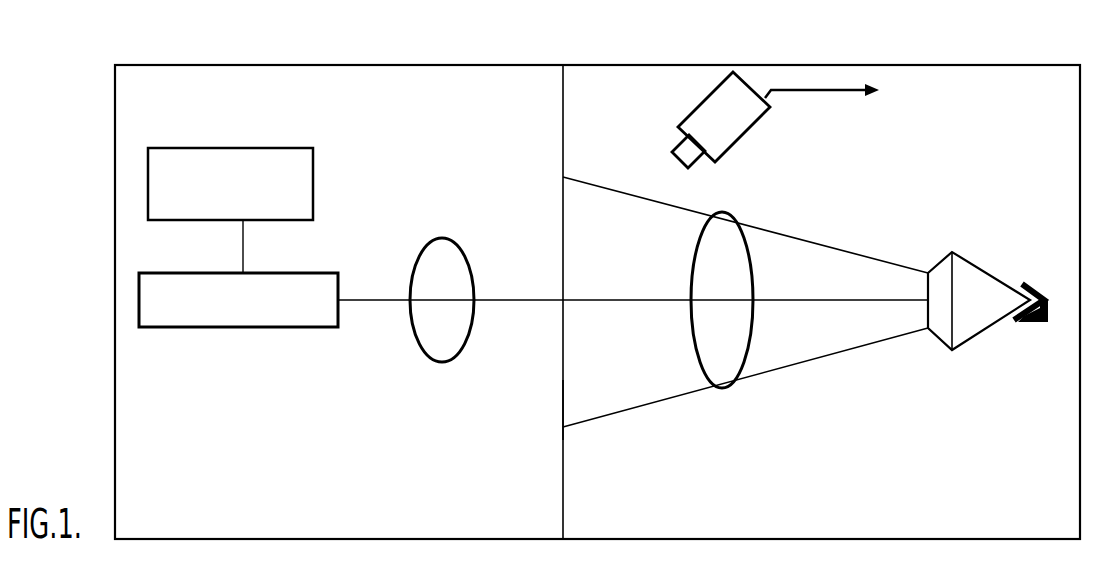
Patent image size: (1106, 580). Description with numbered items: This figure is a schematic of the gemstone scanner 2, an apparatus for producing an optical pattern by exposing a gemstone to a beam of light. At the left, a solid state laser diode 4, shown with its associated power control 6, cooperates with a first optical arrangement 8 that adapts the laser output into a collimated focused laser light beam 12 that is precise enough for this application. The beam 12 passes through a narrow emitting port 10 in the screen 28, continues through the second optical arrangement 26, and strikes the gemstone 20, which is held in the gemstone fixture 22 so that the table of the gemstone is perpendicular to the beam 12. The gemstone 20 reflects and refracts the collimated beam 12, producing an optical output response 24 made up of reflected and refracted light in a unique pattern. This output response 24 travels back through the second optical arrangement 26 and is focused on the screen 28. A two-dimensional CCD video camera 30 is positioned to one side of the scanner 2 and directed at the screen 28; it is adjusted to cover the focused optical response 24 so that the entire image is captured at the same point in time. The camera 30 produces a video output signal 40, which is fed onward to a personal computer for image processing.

The gemstone scanner 2 is at (852, 50).
The solid state laser diode 4 is at (282, 327).
The power control 6 is at (313, 176).
The first optical arrangement 8 is at (455, 357).
The narrow emitting port 10 is at (563, 300).
The collimated focused laser light beam 12 is at (527, 300).
The gemstone 20 is at (970, 340).
The gemstone fixture 22 is at (1033, 325).
The optical output response 24 is at (822, 335).
The second optical arrangement 26 is at (720, 366).
The screen 28 is at (563, 398).
The two-dimensional CCD video camera 30 is at (703, 100).
The video output signal 40 is at (795, 88).